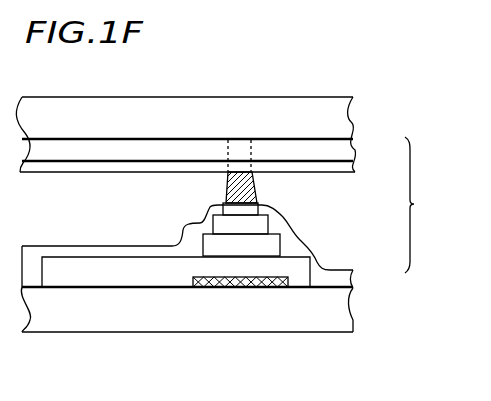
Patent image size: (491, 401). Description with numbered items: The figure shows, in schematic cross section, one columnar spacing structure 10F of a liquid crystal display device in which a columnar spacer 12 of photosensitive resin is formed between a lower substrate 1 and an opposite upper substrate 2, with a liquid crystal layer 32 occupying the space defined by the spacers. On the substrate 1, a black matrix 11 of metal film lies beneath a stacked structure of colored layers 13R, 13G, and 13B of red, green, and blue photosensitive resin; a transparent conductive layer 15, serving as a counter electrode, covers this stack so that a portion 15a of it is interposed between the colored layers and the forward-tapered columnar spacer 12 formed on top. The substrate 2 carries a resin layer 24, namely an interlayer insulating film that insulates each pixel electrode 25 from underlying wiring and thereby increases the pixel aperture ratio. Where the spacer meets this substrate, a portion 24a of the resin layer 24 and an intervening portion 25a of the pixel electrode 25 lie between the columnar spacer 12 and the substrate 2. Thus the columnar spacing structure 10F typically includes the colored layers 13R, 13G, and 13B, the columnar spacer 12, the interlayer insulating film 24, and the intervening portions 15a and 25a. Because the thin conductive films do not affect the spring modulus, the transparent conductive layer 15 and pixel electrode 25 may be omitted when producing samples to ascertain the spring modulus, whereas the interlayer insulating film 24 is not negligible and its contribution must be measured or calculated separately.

The substrate 1 is at (350, 312).
The substrate 2 is at (343, 118).
The black matrix 11 is at (245, 288).
The columnar spacer 12 is at (252, 182).
The colored layer 13R is at (268, 270).
The colored layer 13G is at (268, 247).
The colored layer 13B is at (258, 223).
The transparent conductive layer 15 is at (108, 247).
The portion of the transparent conductive layer 15a is at (260, 205).
The resin layer 24 is at (37, 147).
The portion of the resin layer 24a is at (252, 145).
The pixel electrode 25 is at (102, 170).
The intervening portion of the pixel electrode 25a is at (252, 163).
The liquid crystal layer 32 is at (63, 210).
The columnar spacing structure 10F is at (425, 205).